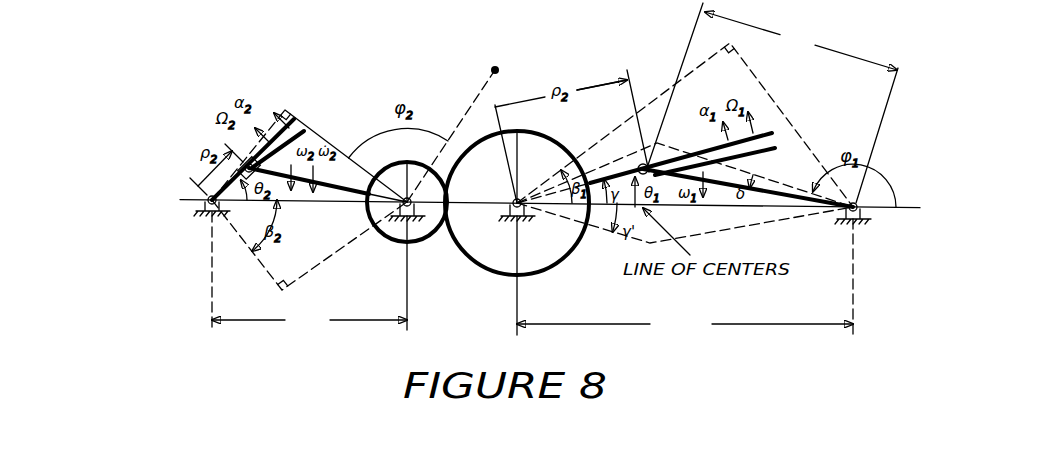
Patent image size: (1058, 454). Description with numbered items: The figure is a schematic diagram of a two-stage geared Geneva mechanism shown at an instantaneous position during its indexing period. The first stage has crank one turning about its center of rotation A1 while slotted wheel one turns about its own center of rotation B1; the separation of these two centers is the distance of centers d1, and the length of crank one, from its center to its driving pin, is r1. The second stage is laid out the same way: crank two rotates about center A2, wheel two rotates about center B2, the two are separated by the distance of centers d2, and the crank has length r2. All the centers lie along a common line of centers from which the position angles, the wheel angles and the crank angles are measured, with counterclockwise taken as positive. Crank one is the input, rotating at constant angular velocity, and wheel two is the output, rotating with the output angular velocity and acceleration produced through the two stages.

The center of rotation of crank 1 A1 is at (864, 269).
The center of rotation of crank 2 A2 is at (407, 246).
The center of rotation of wheel 1 B1 is at (517, 233).
The center of rotation of wheel 2 B2 is at (202, 263).
The distance of centers of first stage d1 is at (685, 327).
The distance of centers of second stage d2 is at (309, 323).
The length of crank 1 r1 is at (773, 103).
The length of crank 2 r2 is at (453, 134).